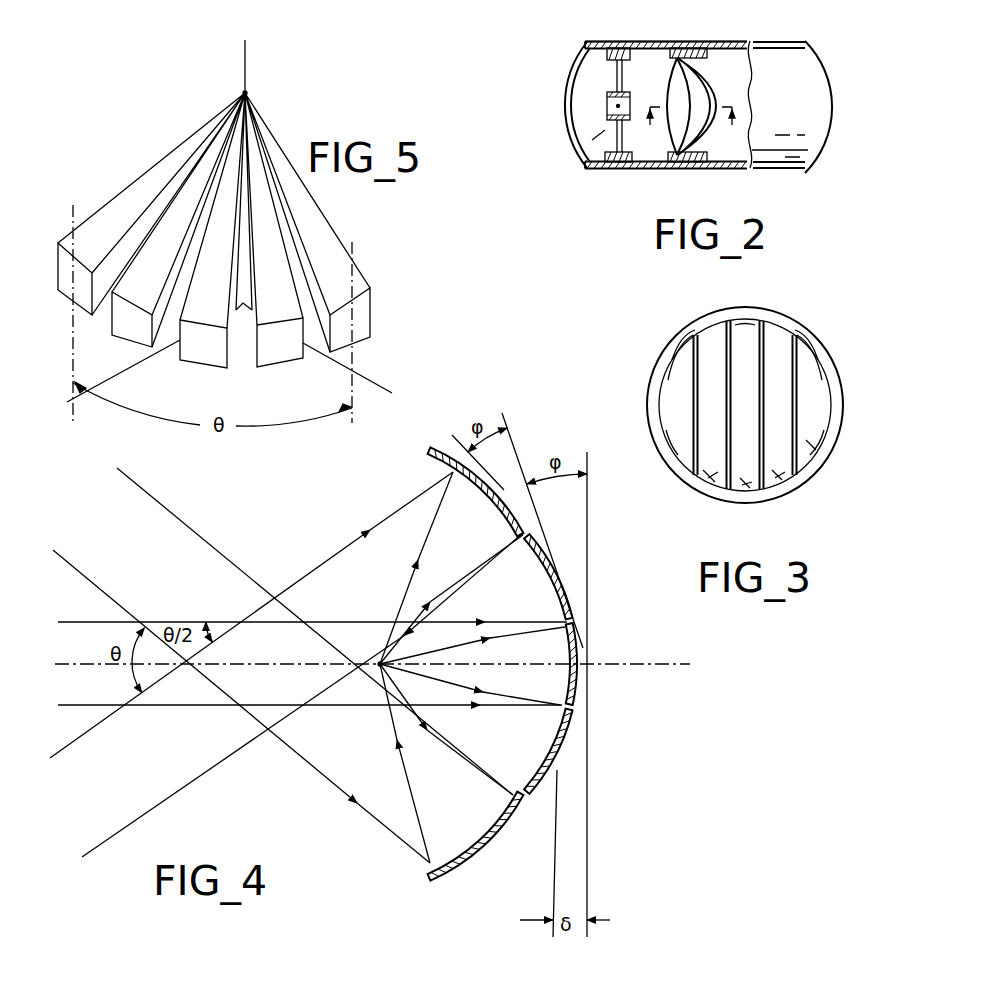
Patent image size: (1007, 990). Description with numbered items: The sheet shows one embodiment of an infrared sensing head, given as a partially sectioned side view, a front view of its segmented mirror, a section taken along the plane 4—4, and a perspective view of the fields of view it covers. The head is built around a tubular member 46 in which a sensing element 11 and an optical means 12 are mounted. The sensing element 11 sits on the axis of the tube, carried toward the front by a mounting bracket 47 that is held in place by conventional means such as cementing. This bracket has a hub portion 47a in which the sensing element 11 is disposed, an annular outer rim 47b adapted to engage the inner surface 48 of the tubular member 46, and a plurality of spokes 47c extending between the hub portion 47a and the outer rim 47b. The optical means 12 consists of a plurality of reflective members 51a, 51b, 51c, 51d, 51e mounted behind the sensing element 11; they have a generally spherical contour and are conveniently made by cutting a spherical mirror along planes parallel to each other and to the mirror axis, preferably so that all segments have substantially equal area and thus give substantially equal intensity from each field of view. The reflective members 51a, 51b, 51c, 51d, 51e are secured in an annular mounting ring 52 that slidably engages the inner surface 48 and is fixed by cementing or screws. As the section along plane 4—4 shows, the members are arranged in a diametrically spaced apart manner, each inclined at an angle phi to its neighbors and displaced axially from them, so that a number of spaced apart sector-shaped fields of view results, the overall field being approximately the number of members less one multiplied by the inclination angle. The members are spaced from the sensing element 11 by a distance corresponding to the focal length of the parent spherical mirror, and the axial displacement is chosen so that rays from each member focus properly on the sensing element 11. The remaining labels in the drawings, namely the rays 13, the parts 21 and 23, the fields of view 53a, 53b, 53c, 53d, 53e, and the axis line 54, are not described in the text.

In FIG. 2, the sensing element 11 is at (608, 95).
In FIG. 4, the sensing element 11 is at (378, 660).
In FIG. 2, the optical means 12 is at (702, 150).
In FIG. 4, the light beam edge rays 13 is at (90, 582).
In FIG. 2, the source holder 21 is at (607, 100).
In FIG. 2, the window 23 is at (585, 111).
In FIG. 2, the tubular member 46 is at (803, 72).
In FIG. 5, the tubular member 46 is at (247, 91).
In FIG. 2, the mounting bracket 47 is at (592, 160).
In FIG. 2, the hub portion 47a is at (629, 95).
In FIG. 2, the annular outer rim 47b is at (635, 163).
In FIG. 2, the spokes 47c is at (600, 143).
In FIG. 2, the inner surface 48 is at (650, 48).
In FIG. 2, the reflective member 51a is at (706, 78).
In FIG. 3, the reflective member 51a is at (745, 492).
In FIG. 4, the reflective member 51a is at (583, 648).
In FIG. 3, the reflective member 51b is at (712, 480).
In FIG. 4, the reflective member 51b is at (555, 588).
In FIG. 3, the reflective member 51c is at (780, 480).
In FIG. 4, the reflective member 51c is at (557, 742).
In FIG. 3, the reflective member 51d is at (665, 358).
In FIG. 4, the reflective member 51d is at (430, 455).
In FIG. 3, the reflective member 51e is at (822, 440).
In FIG. 4, the reflective member 51e is at (420, 877).
In FIG. 2, the annular mounting ring 52 is at (690, 162).
In FIG. 3, the annular mounting ring 52 is at (826, 338).
In FIG. 5, the central beam wedge 53a is at (210, 315).
In FIG. 5, the beam wedge 53b is at (283, 316).
In FIG. 5, the beam wedge 53c is at (142, 292).
In FIG. 5, the outer beam wedge 53d is at (338, 238).
In FIG. 5, the outer beam wedge 53e is at (140, 180).
In FIG. 5, the optical axis 54 is at (243, 62).
In FIG. 2, the sectioning plane 4 is at (694, 125).